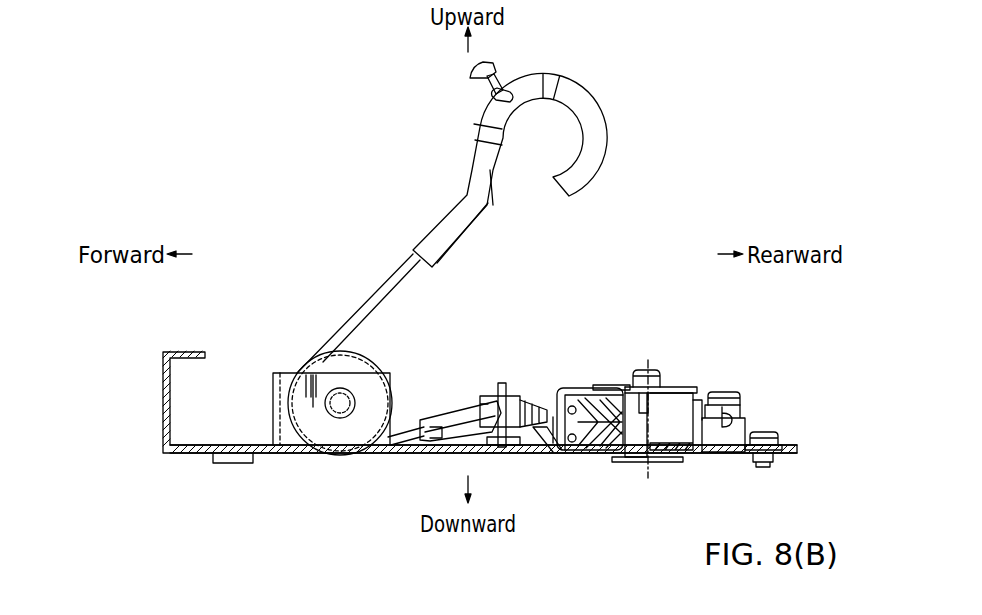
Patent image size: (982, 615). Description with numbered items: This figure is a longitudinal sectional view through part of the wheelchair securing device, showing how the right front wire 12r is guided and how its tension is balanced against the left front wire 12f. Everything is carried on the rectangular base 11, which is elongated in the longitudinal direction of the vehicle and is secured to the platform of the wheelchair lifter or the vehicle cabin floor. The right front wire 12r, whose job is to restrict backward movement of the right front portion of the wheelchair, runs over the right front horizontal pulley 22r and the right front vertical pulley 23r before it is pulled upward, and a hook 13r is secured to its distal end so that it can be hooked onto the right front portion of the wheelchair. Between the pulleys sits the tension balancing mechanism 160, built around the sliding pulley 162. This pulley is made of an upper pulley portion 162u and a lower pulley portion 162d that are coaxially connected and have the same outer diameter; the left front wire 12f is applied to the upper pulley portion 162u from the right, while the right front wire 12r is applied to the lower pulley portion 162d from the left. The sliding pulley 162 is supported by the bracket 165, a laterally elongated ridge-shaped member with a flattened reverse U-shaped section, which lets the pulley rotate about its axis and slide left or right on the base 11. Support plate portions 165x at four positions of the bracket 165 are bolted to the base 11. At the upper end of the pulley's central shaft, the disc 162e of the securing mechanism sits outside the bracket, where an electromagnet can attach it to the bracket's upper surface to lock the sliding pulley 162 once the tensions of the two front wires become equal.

The base 11 is at (189, 348).
The right front wire 12r is at (370, 307).
The left front wire 12f is at (551, 424).
The hook 13r is at (593, 118).
The right front horizontal pulley 22r is at (453, 418).
The right front vertical pulley 23r is at (330, 368).
The tension balancing mechanism 160 is at (695, 375).
The sliding pulley 162 is at (672, 378).
The upper pulley portion 162u is at (616, 386).
The lower pulley portion 162d is at (620, 462).
The disc 162e is at (700, 389).
The bracket 165 is at (577, 388).
The support plate portions 165x is at (783, 444).